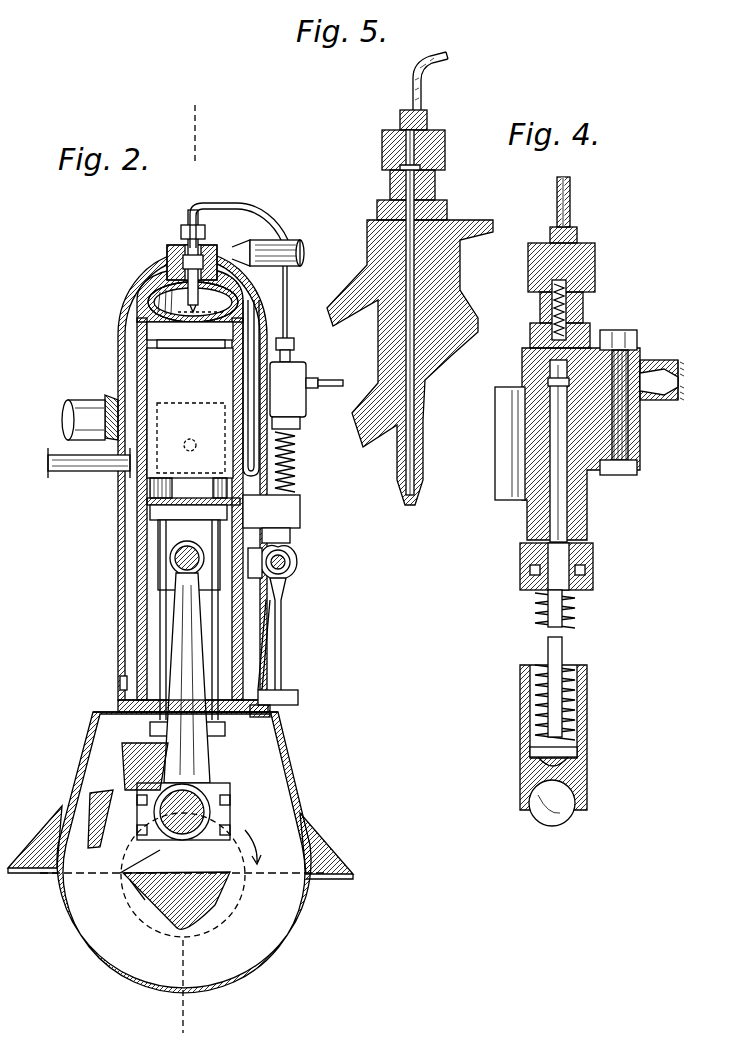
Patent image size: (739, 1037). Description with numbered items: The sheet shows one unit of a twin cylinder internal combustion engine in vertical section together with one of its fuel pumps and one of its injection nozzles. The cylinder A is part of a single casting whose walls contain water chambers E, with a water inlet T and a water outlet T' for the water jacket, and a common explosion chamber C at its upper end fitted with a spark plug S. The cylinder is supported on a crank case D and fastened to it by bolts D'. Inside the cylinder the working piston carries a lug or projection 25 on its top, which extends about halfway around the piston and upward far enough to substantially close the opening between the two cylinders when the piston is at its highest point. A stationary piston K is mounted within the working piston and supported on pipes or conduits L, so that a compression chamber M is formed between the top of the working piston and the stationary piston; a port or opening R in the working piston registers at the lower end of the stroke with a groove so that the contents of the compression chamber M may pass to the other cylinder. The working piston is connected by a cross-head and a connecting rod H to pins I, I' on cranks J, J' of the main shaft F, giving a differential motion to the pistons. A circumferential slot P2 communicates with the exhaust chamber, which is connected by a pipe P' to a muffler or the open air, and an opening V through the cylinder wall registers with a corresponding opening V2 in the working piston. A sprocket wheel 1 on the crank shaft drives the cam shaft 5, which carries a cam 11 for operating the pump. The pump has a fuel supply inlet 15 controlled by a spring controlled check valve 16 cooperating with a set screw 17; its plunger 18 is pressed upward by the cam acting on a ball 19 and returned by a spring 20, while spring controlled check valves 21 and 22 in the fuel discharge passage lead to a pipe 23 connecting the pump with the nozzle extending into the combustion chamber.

In FIG. 2, the sprocket wheel 1 is at (240, 122).
In FIG. 2, the water chambers E is at (120, 317).
In FIG. 2, the cylinder A is at (135, 527).
In FIG. 2, the explosion chamber C is at (165, 277).
In FIG. 2, the lug or projection 25 is at (150, 298).
In FIG. 2, the spark plug S is at (190, 243).
In FIG. 2, the water outlet T' is at (278, 281).
In FIG. 2, the compression chamber M is at (190, 400).
In FIG. 2, the port or opening R is at (178, 348).
In FIG. 2, the stationary piston K is at (185, 505).
In FIG. 2, the crosshead pin N is at (176, 562).
In FIG. 2, the connecting rod H is at (187, 678).
In FIG. 2, the crank case D is at (198, 852).
In FIG. 2, the bolts D' is at (172, 681).
In FIG. 2, the pin I' is at (199, 811).
In FIG. 2, the pin I is at (128, 795).
In FIG. 2, the main shaft F is at (200, 905).
In FIG. 2, the crank J is at (115, 882).
In FIG. 2, the crank J' is at (118, 909).
In FIG. 2, the pipe P' is at (98, 406).
In FIG. 2, the circumferential slot P2 is at (130, 422).
In FIG. 2, the water inlet T is at (88, 478).
In FIG. 2, the opening V is at (240, 483).
In FIG. 2, the opening V2 is at (233, 495).
In FIG. 2, the cam shaft 5 is at (291, 562).
In FIG. 2, the pipes or conduits L is at (160, 644).
In FIG. 4, the pipe 23 is at (572, 200).
In FIG. 4, the spring controlled check valve 22 is at (556, 330).
In FIG. 4, the cam 11 is at (598, 444).
In FIG. 4, the spring controlled check valve 21 is at (553, 381).
In FIG. 4, the set screw 17 is at (620, 332).
In FIG. 4, the fuel supply inlet 15 is at (662, 378).
In FIG. 4, the spring controlled check valve 16 is at (648, 360).
In FIG. 4, the plunger 18 is at (560, 566).
In FIG. 4, the spring 20 is at (577, 626).
In FIG. 4, the ball 19 is at (552, 805).